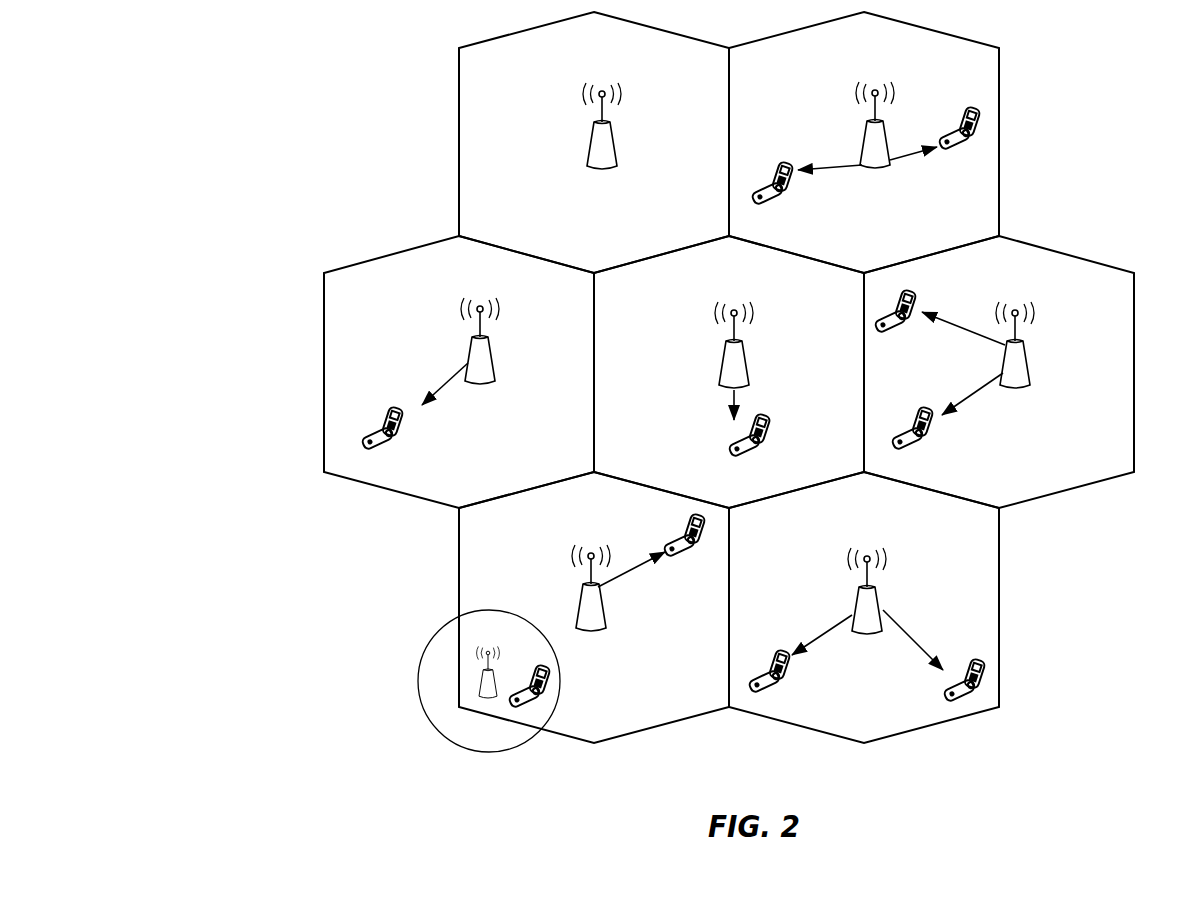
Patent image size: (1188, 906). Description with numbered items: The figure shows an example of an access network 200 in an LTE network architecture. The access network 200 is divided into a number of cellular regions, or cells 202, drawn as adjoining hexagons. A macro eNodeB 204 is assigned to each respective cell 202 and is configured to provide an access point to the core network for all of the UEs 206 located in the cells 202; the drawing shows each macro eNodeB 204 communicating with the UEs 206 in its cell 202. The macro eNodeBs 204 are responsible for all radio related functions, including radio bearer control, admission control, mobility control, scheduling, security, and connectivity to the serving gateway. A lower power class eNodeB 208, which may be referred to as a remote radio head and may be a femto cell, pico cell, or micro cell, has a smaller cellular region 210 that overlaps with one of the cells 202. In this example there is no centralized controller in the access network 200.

The access network 200 is at (222, 92).
The cellular region (cell) 202 is at (459, 98).
The macro eNodeB 204 is at (598, 77).
The UE 206 is at (790, 183).
The lower power class eNodeB 208 is at (485, 641).
The cellular region of lower power class eNodeB 210 is at (432, 685).